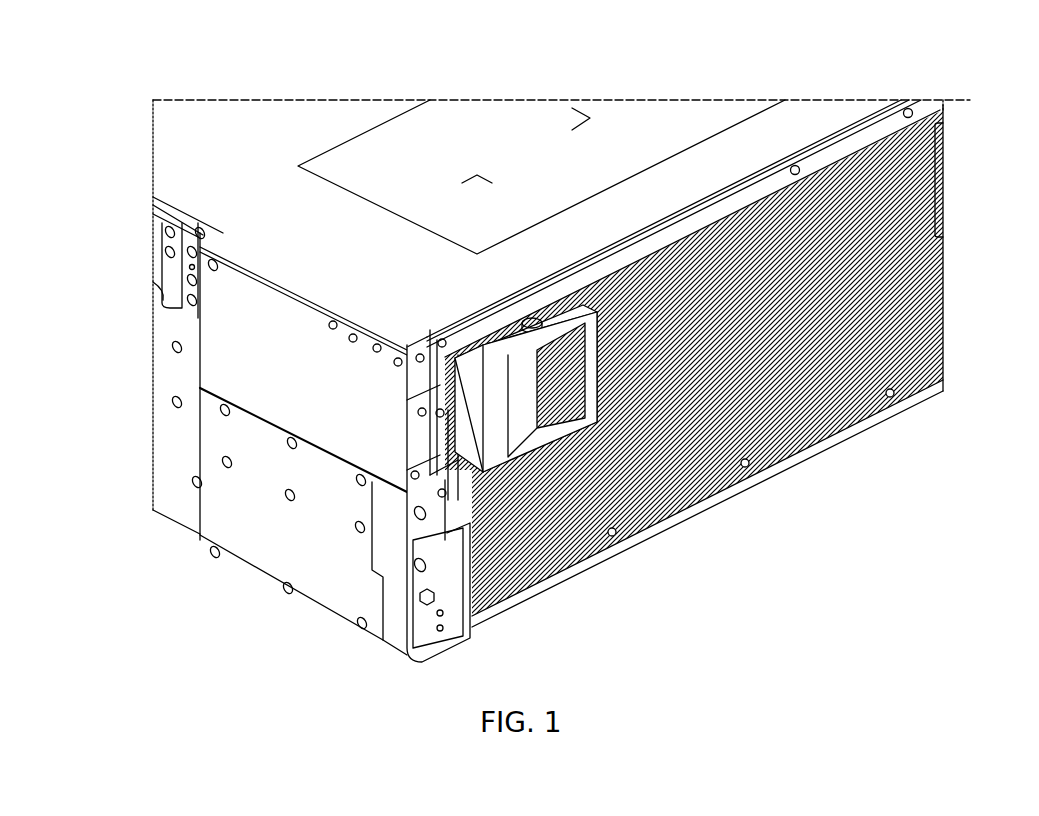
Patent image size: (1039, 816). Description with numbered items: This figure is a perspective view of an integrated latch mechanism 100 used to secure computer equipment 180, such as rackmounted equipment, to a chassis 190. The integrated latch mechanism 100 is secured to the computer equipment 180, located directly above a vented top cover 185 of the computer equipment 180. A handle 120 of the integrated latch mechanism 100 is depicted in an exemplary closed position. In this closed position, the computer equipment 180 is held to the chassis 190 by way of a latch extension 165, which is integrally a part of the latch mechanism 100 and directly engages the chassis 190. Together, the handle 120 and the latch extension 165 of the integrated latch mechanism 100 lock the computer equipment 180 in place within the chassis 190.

The integrated latch mechanism 100 is at (560, 288).
The handle 120 is at (595, 395).
The latch extension 165 is at (403, 378).
The computer equipment 180 is at (851, 372).
The vented top cover 185 is at (905, 274).
The chassis 190 is at (235, 327).